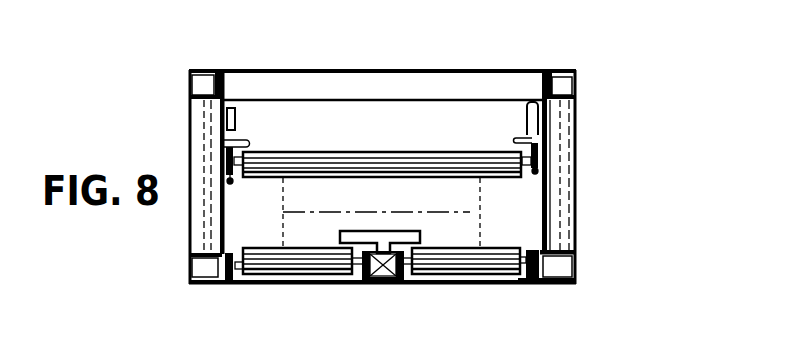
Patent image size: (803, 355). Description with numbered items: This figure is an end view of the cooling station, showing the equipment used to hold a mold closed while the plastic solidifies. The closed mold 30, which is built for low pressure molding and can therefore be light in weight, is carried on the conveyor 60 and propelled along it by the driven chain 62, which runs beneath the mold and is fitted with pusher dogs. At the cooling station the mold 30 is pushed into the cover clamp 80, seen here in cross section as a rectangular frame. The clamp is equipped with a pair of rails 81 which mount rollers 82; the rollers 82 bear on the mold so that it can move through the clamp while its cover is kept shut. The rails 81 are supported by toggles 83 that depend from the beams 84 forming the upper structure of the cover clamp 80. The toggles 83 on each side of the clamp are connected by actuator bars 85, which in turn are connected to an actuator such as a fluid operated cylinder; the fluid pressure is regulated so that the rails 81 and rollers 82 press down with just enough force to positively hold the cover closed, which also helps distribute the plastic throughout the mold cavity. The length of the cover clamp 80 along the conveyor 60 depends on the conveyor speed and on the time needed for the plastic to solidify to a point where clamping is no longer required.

The mold 30 is at (482, 203).
The conveyor 60 is at (533, 287).
The driven chain 62 is at (383, 287).
The cover clamp 80 is at (590, 262).
The rail 81 is at (229, 184).
The roller 82 is at (360, 152).
The toggle 83 is at (232, 139).
The beam 84 is at (558, 72).
The actuator bar 85 is at (240, 112).